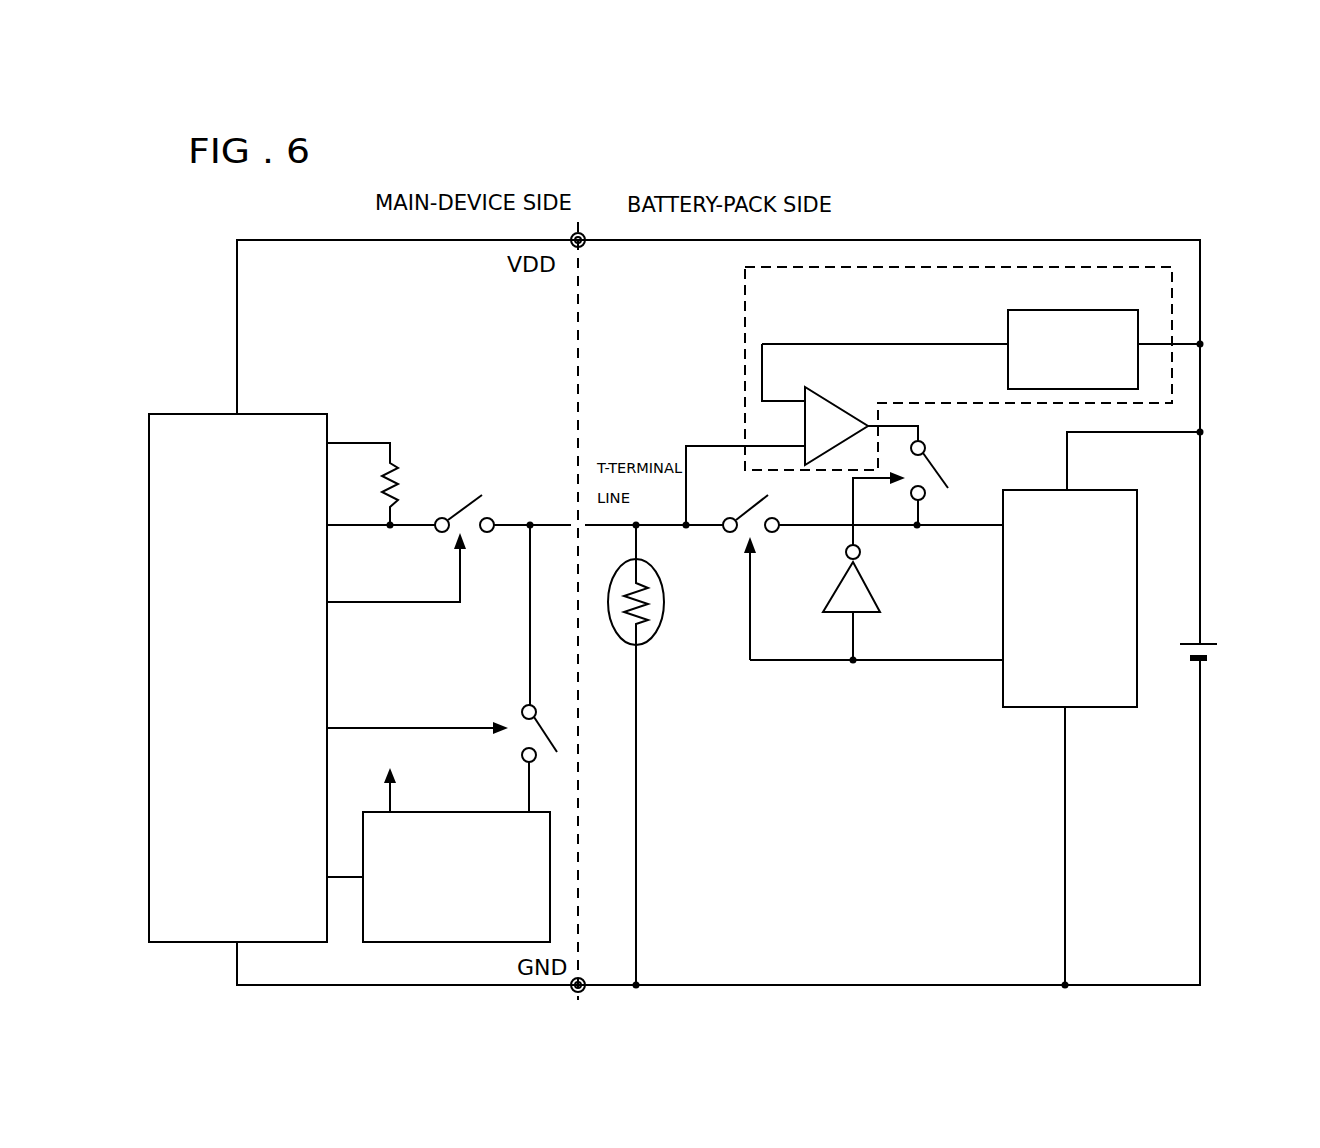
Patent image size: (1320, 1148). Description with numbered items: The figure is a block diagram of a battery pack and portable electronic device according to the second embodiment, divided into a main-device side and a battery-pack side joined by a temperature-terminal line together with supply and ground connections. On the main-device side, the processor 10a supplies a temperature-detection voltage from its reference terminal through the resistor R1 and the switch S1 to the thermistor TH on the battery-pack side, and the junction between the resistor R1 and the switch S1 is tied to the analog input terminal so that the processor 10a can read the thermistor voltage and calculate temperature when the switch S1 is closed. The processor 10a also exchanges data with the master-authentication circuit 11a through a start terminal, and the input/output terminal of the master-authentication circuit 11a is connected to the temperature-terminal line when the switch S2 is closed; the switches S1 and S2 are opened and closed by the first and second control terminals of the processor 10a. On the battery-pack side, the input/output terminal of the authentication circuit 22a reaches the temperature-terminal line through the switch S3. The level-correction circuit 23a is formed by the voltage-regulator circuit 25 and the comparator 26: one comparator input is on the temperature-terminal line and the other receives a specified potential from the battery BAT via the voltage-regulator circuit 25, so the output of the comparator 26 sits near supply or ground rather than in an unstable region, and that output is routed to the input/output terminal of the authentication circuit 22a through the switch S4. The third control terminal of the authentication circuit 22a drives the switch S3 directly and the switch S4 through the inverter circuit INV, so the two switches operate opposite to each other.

The CPU 10a is at (297, 413).
The master-authentication circuit 11a is at (417, 810).
The authentication circuit 22a is at (1088, 488).
The level-correction circuit 23a is at (745, 318).
The voltage-regulator circuit 25 is at (1052, 308).
The comparator 26 is at (815, 390).
The resistor R1 is at (383, 486).
The switch S1 is at (449, 548).
The switch S2 is at (442, 668).
The switch S3 is at (863, 577).
The switch S4 is at (940, 482).
The thermistor TH is at (643, 755).
The inverter circuit INV is at (874, 568).
The battery BAT is at (1217, 634).